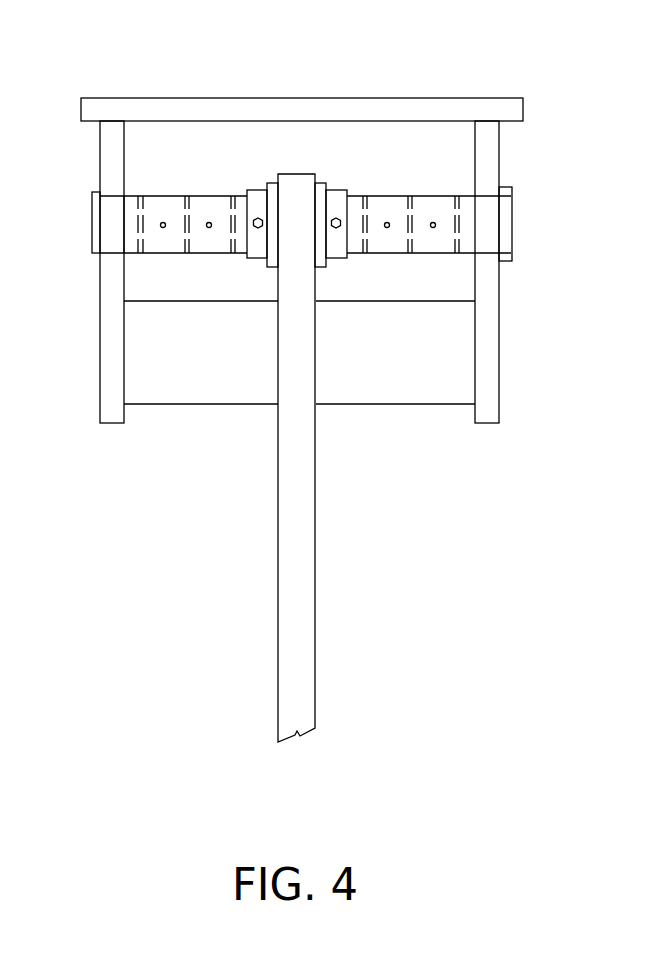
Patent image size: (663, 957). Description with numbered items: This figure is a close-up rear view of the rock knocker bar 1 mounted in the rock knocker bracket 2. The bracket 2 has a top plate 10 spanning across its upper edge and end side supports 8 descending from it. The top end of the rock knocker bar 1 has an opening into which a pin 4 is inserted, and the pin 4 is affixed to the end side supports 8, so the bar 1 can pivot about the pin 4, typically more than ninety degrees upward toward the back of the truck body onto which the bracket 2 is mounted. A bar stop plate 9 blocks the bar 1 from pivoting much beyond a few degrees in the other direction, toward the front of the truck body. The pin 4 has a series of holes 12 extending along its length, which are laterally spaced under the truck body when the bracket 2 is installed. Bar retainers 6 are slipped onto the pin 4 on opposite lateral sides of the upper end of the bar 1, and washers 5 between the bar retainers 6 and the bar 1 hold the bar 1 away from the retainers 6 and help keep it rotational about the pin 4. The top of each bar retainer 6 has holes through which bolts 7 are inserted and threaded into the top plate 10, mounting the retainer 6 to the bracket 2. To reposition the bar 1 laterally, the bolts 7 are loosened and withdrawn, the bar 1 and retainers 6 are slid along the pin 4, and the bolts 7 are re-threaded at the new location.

The rock knocker bar 1 is at (300, 580).
The rock knocker bracket 2 is at (299, 252).
The pin 4 is at (208, 253).
The washers 5 is at (322, 183).
The bar retainers 6 is at (337, 210).
The bolts 7 is at (254, 222).
The end side supports 8 is at (495, 367).
The bar stop plate 9 is at (400, 385).
The top plate 10 is at (493, 107).
The holes 12 is at (436, 224).